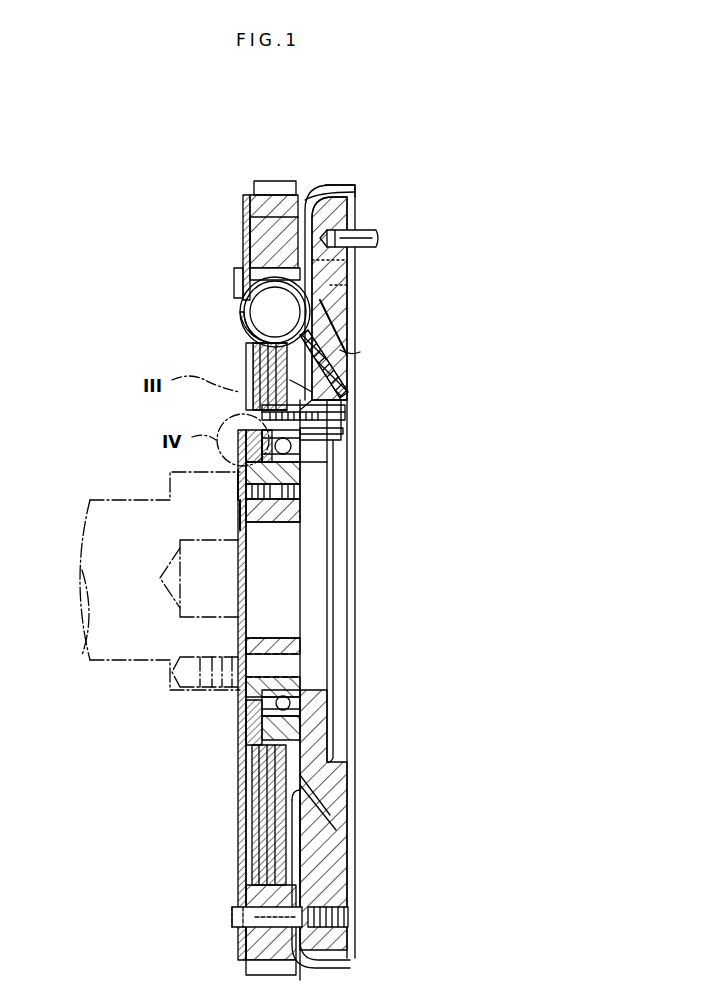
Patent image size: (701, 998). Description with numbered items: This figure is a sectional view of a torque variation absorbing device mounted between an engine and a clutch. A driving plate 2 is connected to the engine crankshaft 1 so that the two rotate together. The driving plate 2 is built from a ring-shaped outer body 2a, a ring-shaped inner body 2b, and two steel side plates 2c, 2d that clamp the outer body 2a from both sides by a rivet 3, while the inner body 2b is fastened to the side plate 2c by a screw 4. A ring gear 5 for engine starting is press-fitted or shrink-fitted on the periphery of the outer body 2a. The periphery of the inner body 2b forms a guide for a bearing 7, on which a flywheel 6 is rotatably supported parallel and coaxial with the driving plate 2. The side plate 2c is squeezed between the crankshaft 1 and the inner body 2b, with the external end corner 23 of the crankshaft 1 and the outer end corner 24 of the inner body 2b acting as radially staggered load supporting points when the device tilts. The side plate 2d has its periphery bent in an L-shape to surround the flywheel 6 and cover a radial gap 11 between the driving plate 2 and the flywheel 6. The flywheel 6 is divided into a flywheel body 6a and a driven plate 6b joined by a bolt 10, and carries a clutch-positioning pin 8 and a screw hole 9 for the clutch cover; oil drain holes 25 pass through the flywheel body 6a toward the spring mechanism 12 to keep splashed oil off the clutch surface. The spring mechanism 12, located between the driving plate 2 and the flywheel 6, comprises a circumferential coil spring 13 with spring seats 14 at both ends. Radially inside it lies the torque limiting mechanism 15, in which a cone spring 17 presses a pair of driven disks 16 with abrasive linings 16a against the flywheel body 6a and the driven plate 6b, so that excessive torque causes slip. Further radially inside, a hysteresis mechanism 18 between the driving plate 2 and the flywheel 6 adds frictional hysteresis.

The crankshaft 1 is at (138, 500).
The driving plate 2 is at (262, 222).
The outer body 2a is at (262, 245).
The inner body 2b is at (240, 505).
The side plate 2c is at (246, 265).
The side plate 2d is at (352, 200).
The rivet 3 is at (252, 912).
The screw 4 is at (262, 520).
The ring gear 5 is at (260, 190).
The flywheel 6 is at (356, 320).
The flywheel body 6a is at (350, 368).
The driven plate 6b is at (348, 402).
The bearing 7 is at (302, 446).
The clutch-positioning pin 8 is at (378, 238).
The screw hole 9 is at (348, 912).
The bolt 10 is at (342, 420).
The gap 11 is at (346, 262).
The spring mechanism 12 is at (350, 290).
The coil spring 13 is at (335, 340).
The spring seat 14 is at (255, 305).
The torque limiting mechanism 15 is at (248, 396).
The driven disk 16 is at (258, 372).
The lining 16a is at (256, 355).
The cone spring 17 is at (252, 330).
The hysteresis mechanism 18 is at (328, 462).
The external end corner 23 is at (248, 475).
The outer end corner 24 is at (250, 458).
The oil drain hole 25 is at (362, 356).